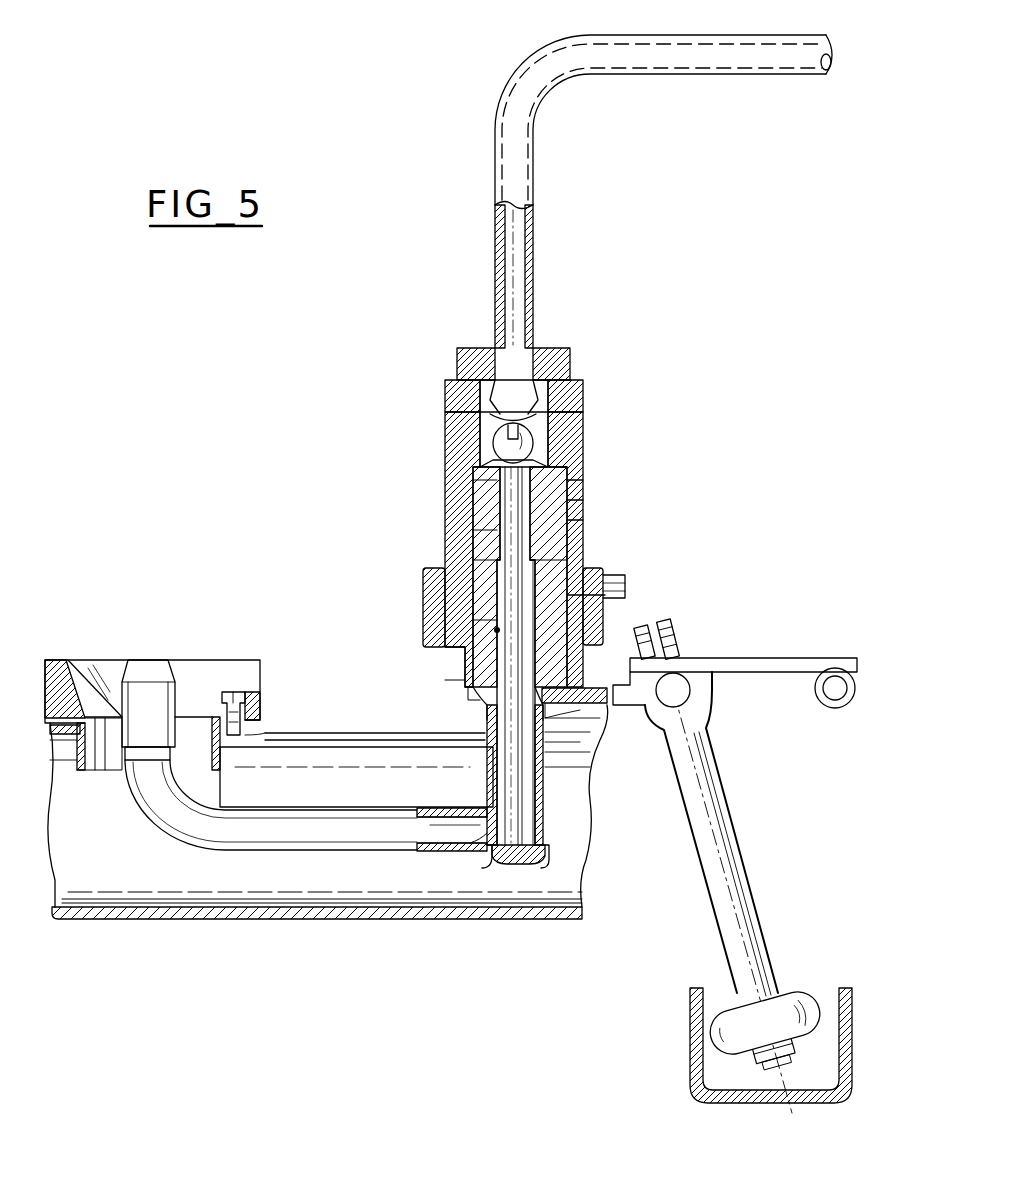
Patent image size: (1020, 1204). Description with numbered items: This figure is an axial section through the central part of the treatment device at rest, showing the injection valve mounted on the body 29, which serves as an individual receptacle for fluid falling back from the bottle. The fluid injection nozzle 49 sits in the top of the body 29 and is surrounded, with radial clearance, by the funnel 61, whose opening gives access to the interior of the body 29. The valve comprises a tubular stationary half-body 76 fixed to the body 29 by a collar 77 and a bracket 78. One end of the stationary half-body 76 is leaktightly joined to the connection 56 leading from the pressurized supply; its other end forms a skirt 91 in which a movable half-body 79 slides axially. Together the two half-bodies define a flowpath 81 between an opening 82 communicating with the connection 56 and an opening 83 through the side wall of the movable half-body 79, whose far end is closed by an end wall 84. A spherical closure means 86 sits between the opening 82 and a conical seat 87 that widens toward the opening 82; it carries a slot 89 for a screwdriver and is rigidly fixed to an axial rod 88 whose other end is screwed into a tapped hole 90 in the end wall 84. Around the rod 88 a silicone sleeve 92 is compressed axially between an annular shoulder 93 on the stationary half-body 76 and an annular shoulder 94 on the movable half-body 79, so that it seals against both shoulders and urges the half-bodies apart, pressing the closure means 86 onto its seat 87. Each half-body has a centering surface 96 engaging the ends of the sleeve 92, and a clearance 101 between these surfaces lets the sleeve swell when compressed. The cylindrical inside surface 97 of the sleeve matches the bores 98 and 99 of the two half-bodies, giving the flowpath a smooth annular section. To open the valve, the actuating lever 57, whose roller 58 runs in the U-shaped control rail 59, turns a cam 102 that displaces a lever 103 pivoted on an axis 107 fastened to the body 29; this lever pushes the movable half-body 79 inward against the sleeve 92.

The body 29 is at (305, 919).
The fluid injection nozzle 49 is at (147, 660).
The connection 56 is at (700, 57).
The lever 57 is at (748, 900).
The roller 58 is at (700, 1075).
The control rail 59 is at (720, 1035).
The funnel 61 is at (634, 477).
The stationary half-body 76 is at (436, 487).
The collar 77 is at (440, 632).
The bracket 78 is at (617, 572).
The movable half-body 79 is at (466, 682).
The flowpath 81 is at (473, 512).
The opening 82 is at (575, 392).
The opening 83 is at (470, 850).
The end wall 84 is at (530, 862).
The spherical closure means 86 is at (548, 432).
The seat 87 is at (492, 412).
The axial rod 88 is at (490, 768).
The slot 89 is at (458, 362).
The tapped hole 90 is at (515, 866).
The skirt 91 is at (445, 582).
The sleeve 92 is at (470, 547).
The annular shoulder 93 is at (565, 497).
The annular shoulder 94 is at (445, 607).
The centering surface 96 is at (572, 463).
The inside surface 97 is at (470, 473).
The bore 98 is at (483, 457).
The bore 99 is at (494, 645).
The clearance 101 is at (473, 522).
The cam 102 is at (690, 694).
The lever 103 is at (750, 662).
The axis 107 is at (832, 702).